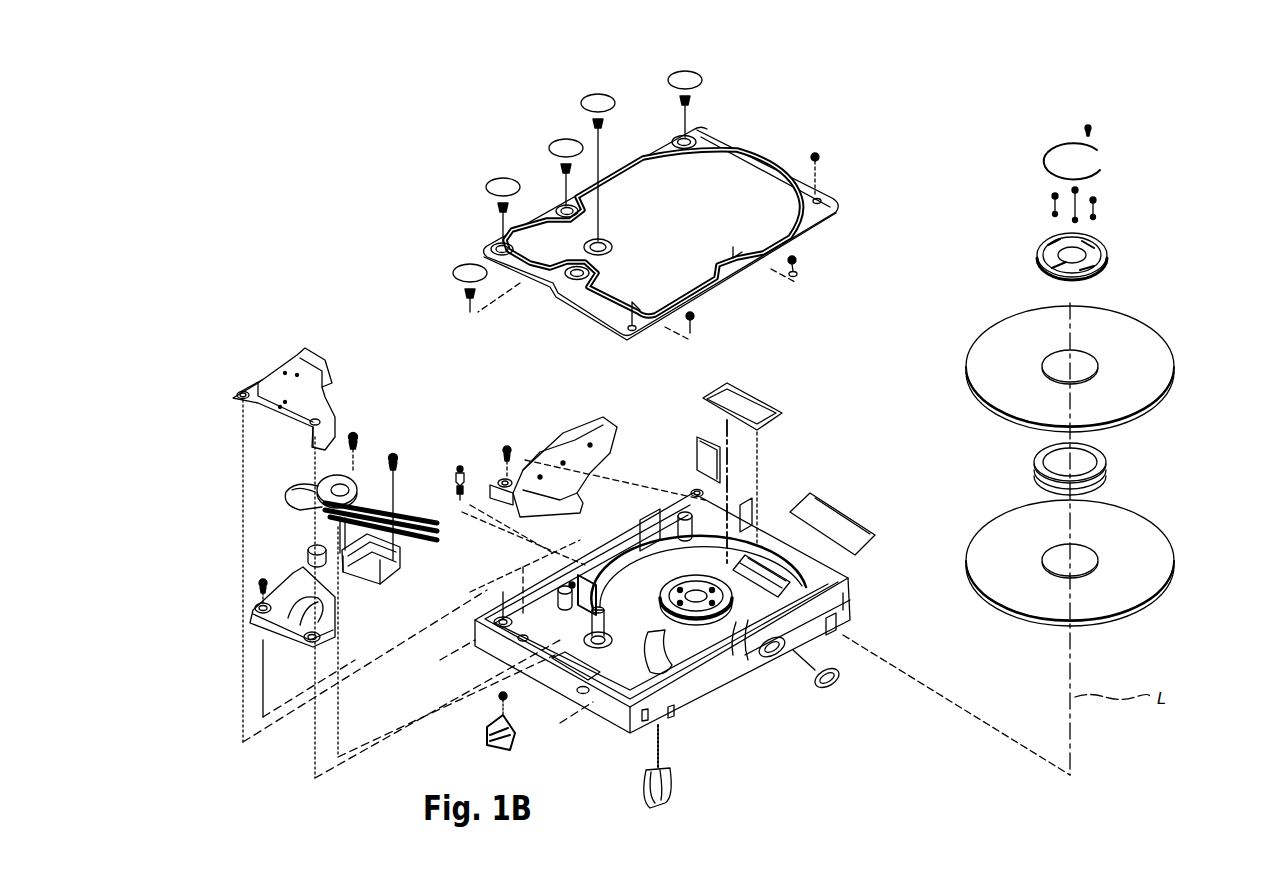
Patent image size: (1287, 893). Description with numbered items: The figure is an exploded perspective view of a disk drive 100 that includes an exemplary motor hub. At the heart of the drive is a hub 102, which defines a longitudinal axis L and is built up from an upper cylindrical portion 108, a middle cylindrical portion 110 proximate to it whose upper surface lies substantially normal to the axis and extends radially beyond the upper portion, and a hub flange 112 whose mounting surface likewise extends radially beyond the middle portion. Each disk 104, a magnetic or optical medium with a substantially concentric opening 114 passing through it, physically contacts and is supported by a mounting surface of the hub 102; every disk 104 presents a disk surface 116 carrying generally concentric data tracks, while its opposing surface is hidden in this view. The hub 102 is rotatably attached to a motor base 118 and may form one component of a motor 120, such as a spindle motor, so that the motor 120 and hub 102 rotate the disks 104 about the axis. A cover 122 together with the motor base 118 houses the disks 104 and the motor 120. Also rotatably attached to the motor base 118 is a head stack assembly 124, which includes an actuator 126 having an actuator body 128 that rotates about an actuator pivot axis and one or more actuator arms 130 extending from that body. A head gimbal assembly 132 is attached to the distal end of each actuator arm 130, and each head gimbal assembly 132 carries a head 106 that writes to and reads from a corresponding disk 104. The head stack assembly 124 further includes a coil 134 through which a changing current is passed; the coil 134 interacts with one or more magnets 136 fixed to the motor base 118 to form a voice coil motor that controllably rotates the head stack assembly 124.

The disk drive 100 is at (274, 106).
The hub 102 is at (812, 640).
The disk 104 is at (967, 357).
The head 106 is at (443, 516).
The upper cylindrical portion 108 is at (728, 645).
The middle cylindrical portion 110 is at (757, 562).
The hub flange 112 is at (712, 628).
The opening 114 is at (1083, 350).
The disk surface 116 is at (1153, 359).
The motor base 118 is at (851, 630).
The motor 120 is at (680, 556).
The cover 122 is at (832, 231).
The head stack assembly 124 is at (428, 560).
The actuator 126 is at (337, 458).
The actuator body 128 is at (353, 487).
The actuator arm 130 is at (367, 490).
The head gimbal assembly 132 is at (428, 510).
The coil 134 is at (282, 485).
The magnet 136 is at (293, 603).